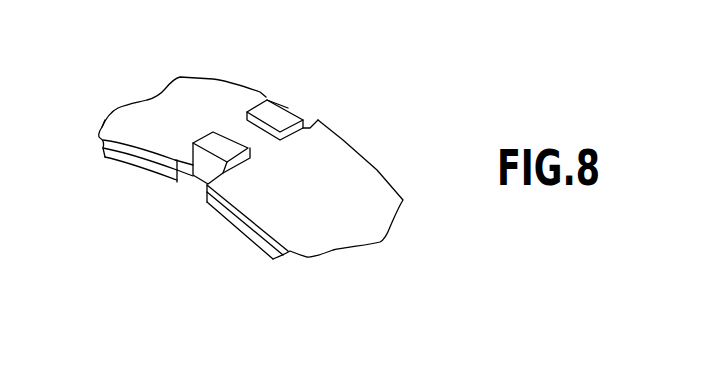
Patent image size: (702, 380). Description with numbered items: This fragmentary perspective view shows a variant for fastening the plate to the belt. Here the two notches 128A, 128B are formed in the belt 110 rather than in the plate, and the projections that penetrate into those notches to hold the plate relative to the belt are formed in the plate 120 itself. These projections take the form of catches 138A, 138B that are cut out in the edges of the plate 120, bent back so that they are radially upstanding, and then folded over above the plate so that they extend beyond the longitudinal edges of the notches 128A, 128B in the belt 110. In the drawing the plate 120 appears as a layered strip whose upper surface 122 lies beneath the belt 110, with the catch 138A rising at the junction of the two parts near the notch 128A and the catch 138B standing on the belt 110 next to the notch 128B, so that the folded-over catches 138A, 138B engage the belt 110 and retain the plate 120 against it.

The belt 110 is at (368, 192).
The plate 120 is at (128, 163).
The top layer of base plate 122 is at (142, 125).
The notch 128A is at (192, 178).
The notch 128B is at (312, 124).
The catch 138A is at (248, 140).
The catch 138B is at (268, 112).